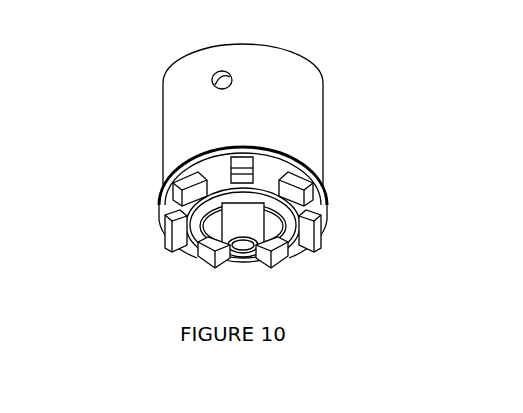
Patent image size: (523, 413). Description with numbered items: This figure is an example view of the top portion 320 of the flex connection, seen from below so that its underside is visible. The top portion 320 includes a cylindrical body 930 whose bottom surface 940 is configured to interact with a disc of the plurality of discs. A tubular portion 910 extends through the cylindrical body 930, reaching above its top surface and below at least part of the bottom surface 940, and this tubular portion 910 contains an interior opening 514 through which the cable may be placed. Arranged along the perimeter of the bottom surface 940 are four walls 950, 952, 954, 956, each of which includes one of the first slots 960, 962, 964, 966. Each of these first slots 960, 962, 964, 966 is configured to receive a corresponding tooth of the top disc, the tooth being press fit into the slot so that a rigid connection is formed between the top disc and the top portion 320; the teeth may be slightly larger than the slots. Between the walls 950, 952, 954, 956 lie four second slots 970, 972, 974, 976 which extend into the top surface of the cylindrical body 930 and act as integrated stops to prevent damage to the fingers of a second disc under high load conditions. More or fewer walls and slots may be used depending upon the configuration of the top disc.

The top portion 320 is at (118, 28).
The cylindrical body 930 is at (163, 105).
The second slot 970 is at (232, 152).
The first slot 960 is at (175, 178).
The wall 950 is at (162, 184).
The bottom surface 940 is at (160, 202).
The wall 952 is at (168, 230).
The tubular portion 910 is at (172, 240).
The first slot 962 is at (187, 262).
The second slot 976 is at (243, 258).
The first slot 966 is at (310, 168).
The wall 956 is at (322, 188).
The second slot 972 is at (326, 208).
The wall 954 is at (326, 222).
The first slot 964 is at (303, 260).
The interior opening 514 is at (256, 258).